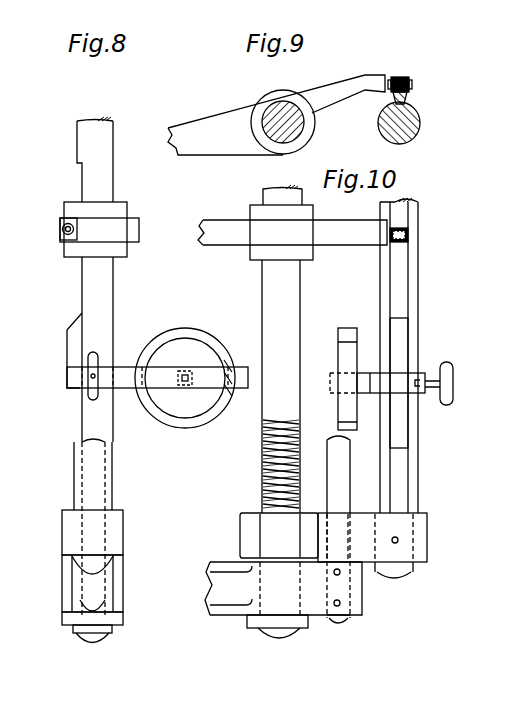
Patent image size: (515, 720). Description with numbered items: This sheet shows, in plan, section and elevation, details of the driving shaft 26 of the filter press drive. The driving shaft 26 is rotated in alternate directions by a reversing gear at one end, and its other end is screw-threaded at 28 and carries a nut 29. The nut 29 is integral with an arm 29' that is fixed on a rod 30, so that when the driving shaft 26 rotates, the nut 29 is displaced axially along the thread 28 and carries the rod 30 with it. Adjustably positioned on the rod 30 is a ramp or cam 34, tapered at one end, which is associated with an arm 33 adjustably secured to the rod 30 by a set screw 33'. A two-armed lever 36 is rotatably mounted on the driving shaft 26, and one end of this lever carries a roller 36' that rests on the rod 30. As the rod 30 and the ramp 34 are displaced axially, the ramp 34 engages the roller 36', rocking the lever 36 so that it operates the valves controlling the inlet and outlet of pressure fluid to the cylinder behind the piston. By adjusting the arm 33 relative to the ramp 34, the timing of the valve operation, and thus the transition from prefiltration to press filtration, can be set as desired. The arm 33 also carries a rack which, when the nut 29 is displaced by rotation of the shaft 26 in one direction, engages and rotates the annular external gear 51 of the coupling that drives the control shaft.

In FIG. 8, the driving shaft 26 is at (109, 160).
In FIG. 9, the driving shaft 26 is at (291, 133).
In FIG. 10, the driving shaft 26 is at (294, 306).
In FIG. 10, the screw thread 28 is at (262, 471).
In FIG. 10, the nut 29 is at (261, 535).
In FIG. 8, the arm 29' is at (89, 541).
In FIG. 10, the arm 29' is at (322, 575).
In FIG. 9, the rod 30 is at (416, 116).
In FIG. 10, the rod 30 is at (410, 480).
In FIG. 10, the arm 33 is at (387, 369).
In FIG. 8, the set screw 33' is at (114, 355).
In FIG. 10, the set screw 33' is at (447, 399).
In FIG. 8, the ramp or cam 34 is at (66, 345).
In FIG. 9, the ramp or cam 34 is at (405, 102).
In FIG. 10, the ramp or cam 34 is at (400, 347).
In FIG. 8, the two-armed lever 36 is at (113, 227).
In FIG. 9, the two-armed lever 36 is at (276, 115).
In FIG. 10, the two-armed lever 36 is at (292, 228).
In FIG. 8, the roller 36' is at (52, 233).
In FIG. 9, the roller 36' is at (415, 72).
In FIG. 10, the roller 36' is at (421, 228).
In FIG. 8, the annular external gear 51 is at (190, 428).
In FIG. 10, the annular external gear 51 is at (344, 330).